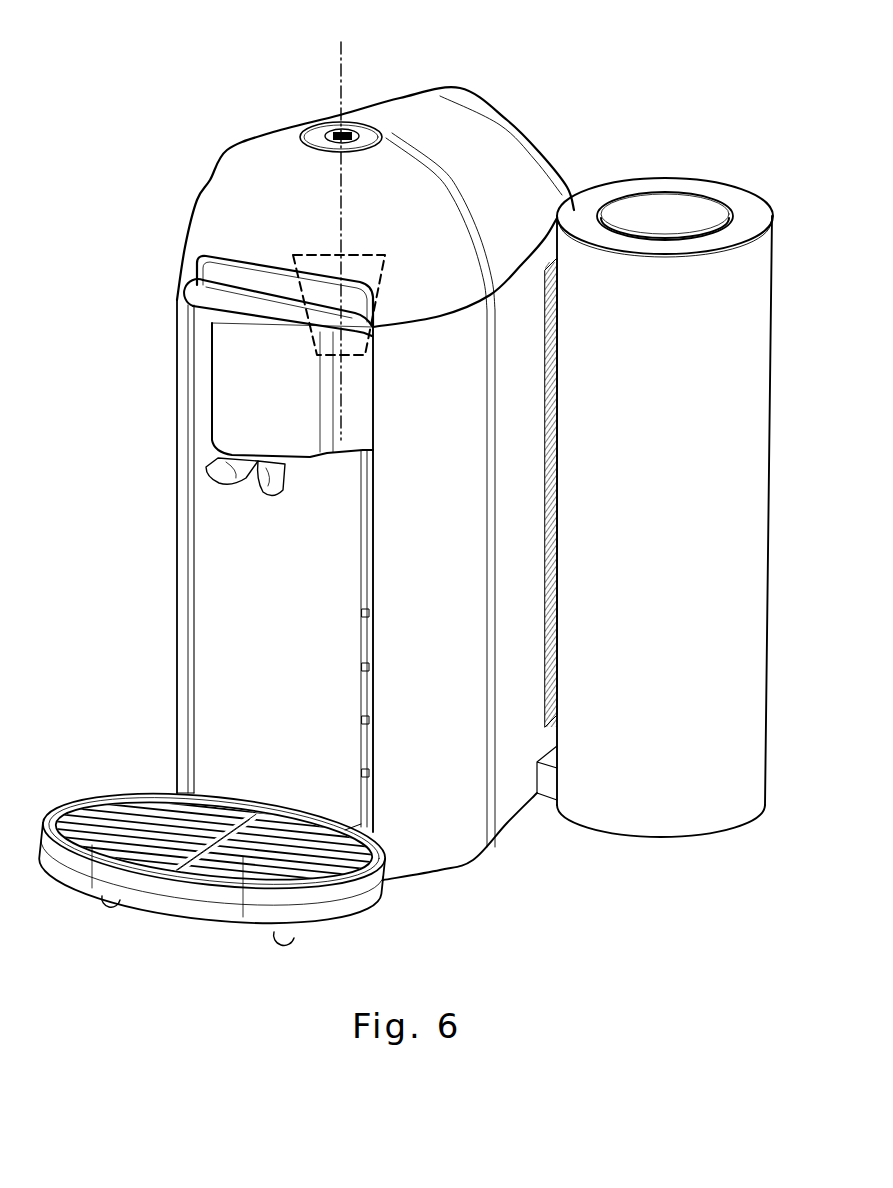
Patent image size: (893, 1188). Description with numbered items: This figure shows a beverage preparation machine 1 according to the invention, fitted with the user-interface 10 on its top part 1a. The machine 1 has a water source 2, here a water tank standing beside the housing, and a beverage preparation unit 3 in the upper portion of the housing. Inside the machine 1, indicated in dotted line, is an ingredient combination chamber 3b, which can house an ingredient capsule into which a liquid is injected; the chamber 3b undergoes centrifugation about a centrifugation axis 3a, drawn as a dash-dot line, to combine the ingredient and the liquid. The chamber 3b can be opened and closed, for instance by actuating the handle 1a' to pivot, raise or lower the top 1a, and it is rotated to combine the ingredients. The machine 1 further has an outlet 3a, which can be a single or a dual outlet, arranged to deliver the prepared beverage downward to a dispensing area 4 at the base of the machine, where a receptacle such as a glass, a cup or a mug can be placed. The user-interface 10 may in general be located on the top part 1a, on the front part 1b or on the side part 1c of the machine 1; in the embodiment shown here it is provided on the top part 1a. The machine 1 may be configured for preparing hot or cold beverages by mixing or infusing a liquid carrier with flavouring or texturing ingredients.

The beverage preparation machine 1 is at (180, 36).
The top part 1a is at (375, 207).
The handle 1a' is at (278, 272).
The front part 1b is at (253, 372).
The side part 1c is at (495, 340).
The water source 2 is at (715, 135).
The beverage preparation unit 3 is at (452, 50).
The outlet 3a is at (341, 52).
The ingredient combination chamber 3b is at (382, 272).
The dispensing area 4 is at (138, 723).
The user-interface 10 is at (318, 138).